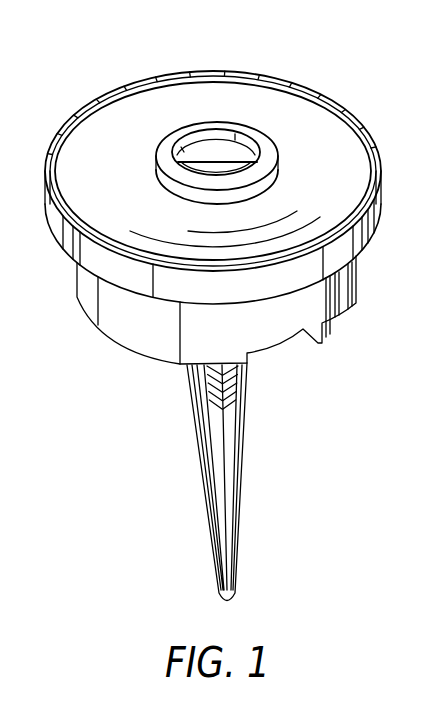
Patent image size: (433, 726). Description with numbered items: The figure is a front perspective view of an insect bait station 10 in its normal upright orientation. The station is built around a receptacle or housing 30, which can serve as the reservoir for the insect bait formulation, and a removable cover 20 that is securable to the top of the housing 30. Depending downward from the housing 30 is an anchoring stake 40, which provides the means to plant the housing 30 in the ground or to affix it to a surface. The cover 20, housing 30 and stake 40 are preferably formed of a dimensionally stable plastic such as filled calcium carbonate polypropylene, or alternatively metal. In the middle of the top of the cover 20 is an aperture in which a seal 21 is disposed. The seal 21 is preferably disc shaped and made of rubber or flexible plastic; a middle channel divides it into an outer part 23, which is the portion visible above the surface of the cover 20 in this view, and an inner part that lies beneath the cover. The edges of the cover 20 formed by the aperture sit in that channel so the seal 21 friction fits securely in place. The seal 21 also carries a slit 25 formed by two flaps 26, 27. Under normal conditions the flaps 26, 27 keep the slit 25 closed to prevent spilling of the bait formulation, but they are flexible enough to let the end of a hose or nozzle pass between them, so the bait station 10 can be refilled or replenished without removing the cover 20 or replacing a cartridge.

The insect bait station 10 is at (213, 318).
The removable cover 20 is at (303, 127).
The seal 21 is at (262, 189).
The outer part 23 is at (242, 125).
The slit 25 is at (198, 162).
The flap 26 is at (212, 176).
The flap 27 is at (210, 147).
The housing 30 is at (342, 330).
The anchoring stake 40 is at (200, 458).